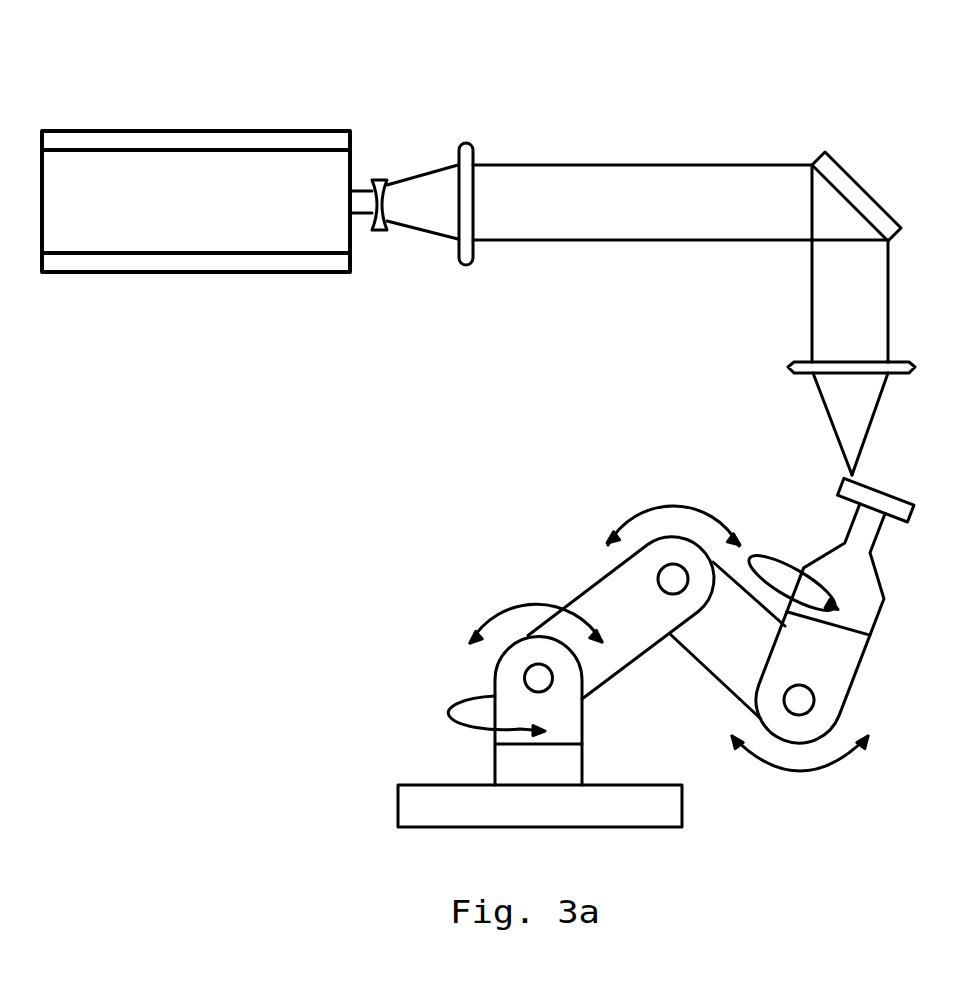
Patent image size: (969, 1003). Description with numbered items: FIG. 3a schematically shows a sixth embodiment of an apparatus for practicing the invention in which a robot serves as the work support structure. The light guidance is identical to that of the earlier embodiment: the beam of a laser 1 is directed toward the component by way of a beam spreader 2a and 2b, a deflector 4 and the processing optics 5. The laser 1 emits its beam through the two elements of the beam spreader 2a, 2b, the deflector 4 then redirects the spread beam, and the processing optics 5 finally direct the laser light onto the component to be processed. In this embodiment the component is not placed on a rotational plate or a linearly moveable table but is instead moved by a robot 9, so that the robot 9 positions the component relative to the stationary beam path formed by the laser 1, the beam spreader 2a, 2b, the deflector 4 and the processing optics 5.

The laser 1 is at (194, 121).
The beam spreader 2a is at (379, 165).
The beam spreader 2b is at (465, 121).
The deflector 4 is at (857, 152).
The processing optics 5 is at (763, 368).
The robot 9 is at (597, 651).